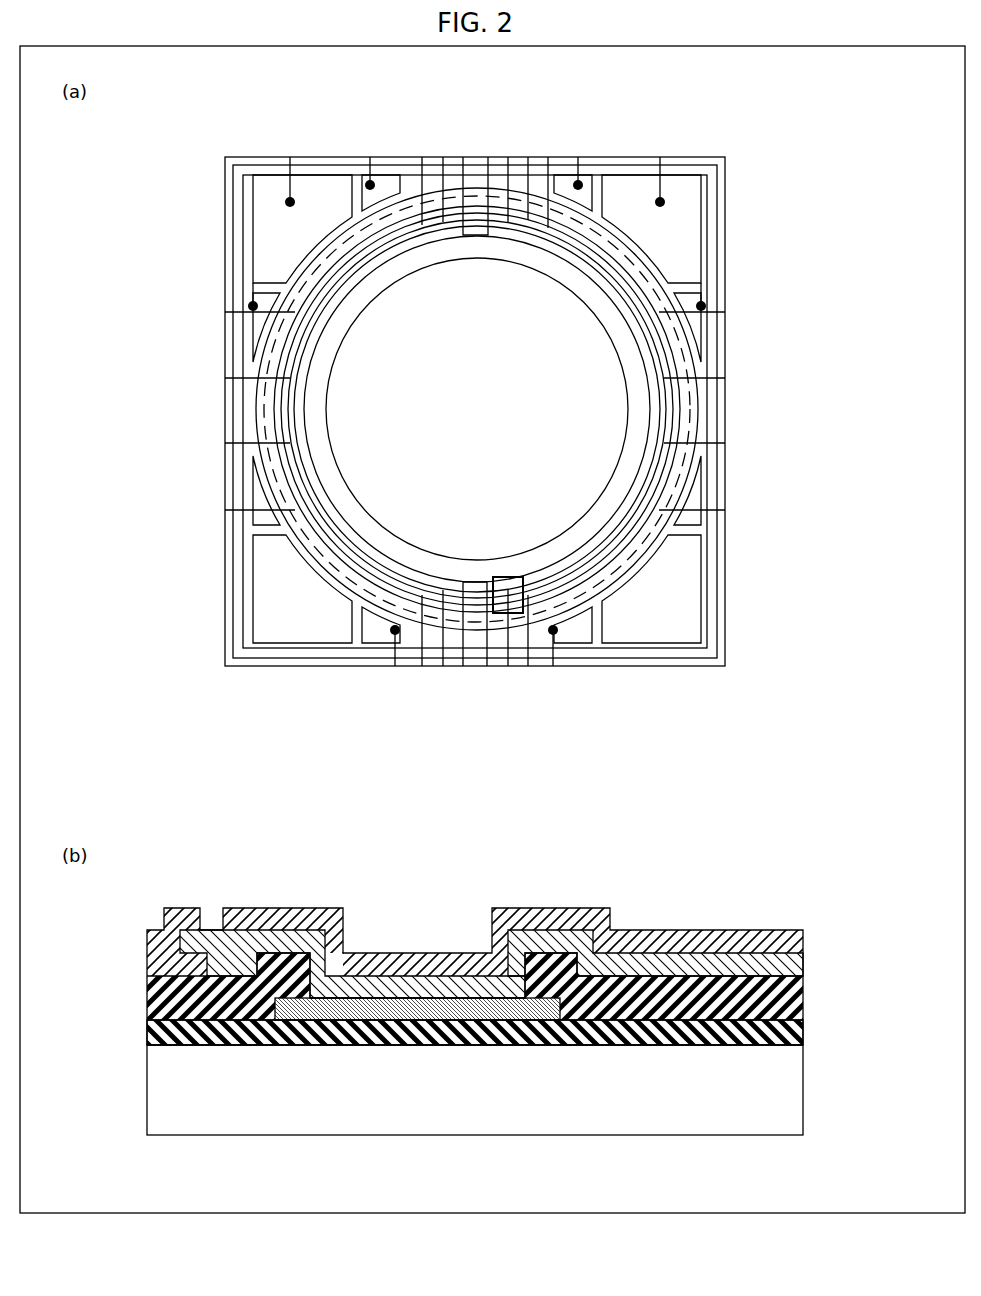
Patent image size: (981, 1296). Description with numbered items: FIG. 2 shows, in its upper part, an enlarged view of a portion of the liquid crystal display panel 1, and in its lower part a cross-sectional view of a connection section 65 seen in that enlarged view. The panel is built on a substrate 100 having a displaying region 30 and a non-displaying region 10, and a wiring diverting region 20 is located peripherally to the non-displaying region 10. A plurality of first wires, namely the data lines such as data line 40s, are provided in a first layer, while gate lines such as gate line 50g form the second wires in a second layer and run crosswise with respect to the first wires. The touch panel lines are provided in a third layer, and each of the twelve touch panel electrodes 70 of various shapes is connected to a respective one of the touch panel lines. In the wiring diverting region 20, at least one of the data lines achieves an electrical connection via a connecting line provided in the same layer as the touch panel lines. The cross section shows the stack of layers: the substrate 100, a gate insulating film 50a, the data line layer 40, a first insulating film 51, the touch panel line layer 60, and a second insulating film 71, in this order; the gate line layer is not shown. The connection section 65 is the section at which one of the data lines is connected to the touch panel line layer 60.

The liquid crystal display panel 1 is at (707, 132).
The substrate 100 is at (803, 1100).
The non-displaying region 10 is at (375, 355).
The wiring diverting region 20 is at (474, 592).
The displaying region 30 is at (660, 620).
The data line layer 40 is at (356, 1020).
The data line 40s is at (470, 175).
The gate line 50g is at (720, 312).
The gate insulating film 50a is at (803, 1030).
The first insulating film 51 is at (803, 997).
The touch panel line layer 60 is at (803, 964).
The connection section 65 is at (515, 613).
The touch panel electrode 70 is at (633, 190).
The second insulating film 71 is at (803, 940).